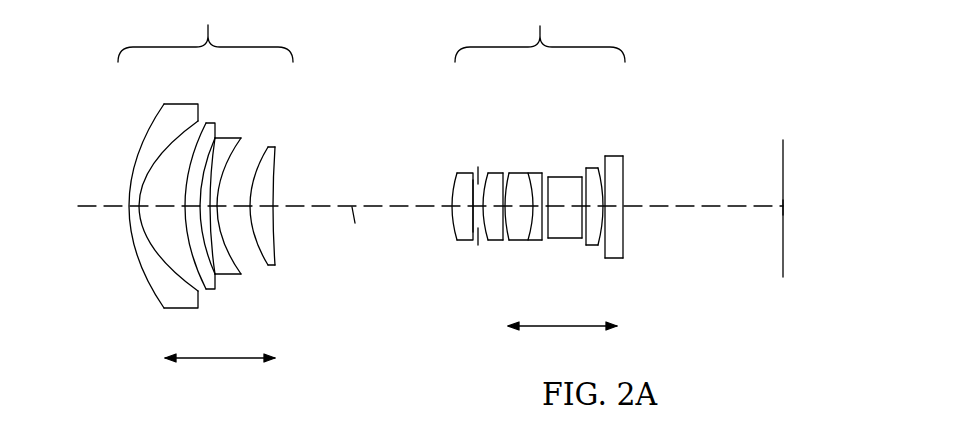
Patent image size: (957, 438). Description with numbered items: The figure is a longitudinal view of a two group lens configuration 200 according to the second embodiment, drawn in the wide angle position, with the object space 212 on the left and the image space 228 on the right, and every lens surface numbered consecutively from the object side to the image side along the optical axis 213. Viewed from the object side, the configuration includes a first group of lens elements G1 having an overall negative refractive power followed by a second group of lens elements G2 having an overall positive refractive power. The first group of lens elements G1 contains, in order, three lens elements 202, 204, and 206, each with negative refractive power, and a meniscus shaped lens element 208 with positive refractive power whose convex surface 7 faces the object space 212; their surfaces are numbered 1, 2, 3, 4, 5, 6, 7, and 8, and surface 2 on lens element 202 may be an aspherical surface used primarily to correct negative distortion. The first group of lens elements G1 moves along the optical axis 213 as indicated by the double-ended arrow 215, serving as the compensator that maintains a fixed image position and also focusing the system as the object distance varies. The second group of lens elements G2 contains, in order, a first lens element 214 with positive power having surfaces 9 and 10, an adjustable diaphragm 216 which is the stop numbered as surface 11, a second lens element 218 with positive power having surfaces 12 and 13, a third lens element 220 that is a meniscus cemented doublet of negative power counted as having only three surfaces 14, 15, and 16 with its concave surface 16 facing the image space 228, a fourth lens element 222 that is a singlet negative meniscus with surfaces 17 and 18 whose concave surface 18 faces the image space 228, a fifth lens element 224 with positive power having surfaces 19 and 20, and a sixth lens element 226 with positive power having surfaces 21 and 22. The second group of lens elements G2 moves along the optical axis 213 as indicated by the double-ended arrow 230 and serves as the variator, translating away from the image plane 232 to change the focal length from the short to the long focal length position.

The two group lens configuration 200 is at (68, 58).
The object space 212 is at (40, 218).
The optical axis 213 is at (356, 228).
The double-ended arrow 215 is at (220, 370).
The double-ended arrow 230 is at (562, 337).
The image space 228 is at (835, 189).
The image plane 232 is at (783, 252).
The first group of lens elements G1 is at (205, 32).
The second group of lens elements G2 is at (540, 32).
The lens element 202 is at (148, 183).
The lens element 204 is at (187, 204).
The lens element 206 is at (236, 207).
The meniscus shaped lens element 208 is at (271, 204).
The first lens element 214 is at (452, 205).
The adjustable diaphragm 216 is at (482, 198).
The second lens element 218 is at (501, 217).
The third lens element 220 is at (534, 202).
The fourth lens element 222 is at (575, 218).
The fifth lens element 224 is at (623, 194).
The sixth lens element 226 is at (636, 188).
The surface 1 is at (131, 241).
The surface 2 is at (160, 258).
The surface 3 is at (190, 258).
The surface 4 is at (203, 262).
The surface 5 is at (212, 262).
The surface 6 is at (231, 252).
The convex surface 7 is at (263, 257).
The surface 8 is at (276, 262).
The surface 9 is at (455, 222).
The surface 10 is at (468, 228).
The surface 11 is at (478, 244).
The surface 12 is at (488, 232).
The surface 13 is at (503, 242).
The surface 14 is at (508, 238).
The surface 15 is at (530, 243).
The concave surface 16 is at (542, 242).
The surface 17 is at (553, 243).
The concave surface 18 is at (582, 242).
The surface 19 is at (586, 247).
The surface 20 is at (600, 248).
The surface 21 is at (605, 244).
The surface 22 is at (623, 228).